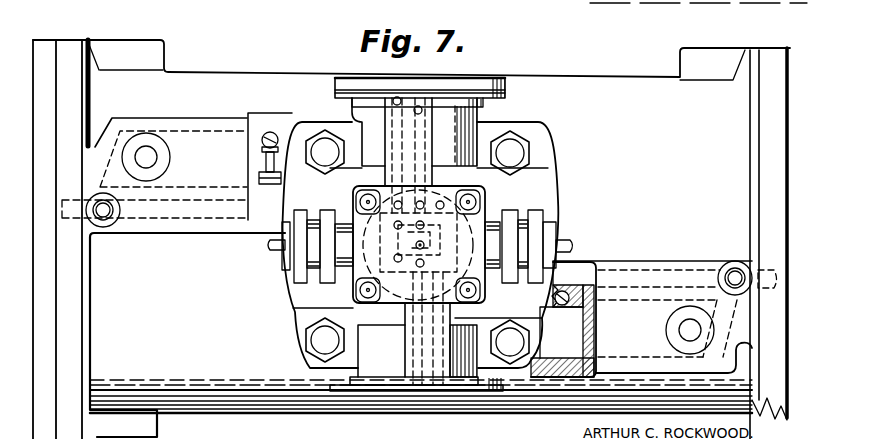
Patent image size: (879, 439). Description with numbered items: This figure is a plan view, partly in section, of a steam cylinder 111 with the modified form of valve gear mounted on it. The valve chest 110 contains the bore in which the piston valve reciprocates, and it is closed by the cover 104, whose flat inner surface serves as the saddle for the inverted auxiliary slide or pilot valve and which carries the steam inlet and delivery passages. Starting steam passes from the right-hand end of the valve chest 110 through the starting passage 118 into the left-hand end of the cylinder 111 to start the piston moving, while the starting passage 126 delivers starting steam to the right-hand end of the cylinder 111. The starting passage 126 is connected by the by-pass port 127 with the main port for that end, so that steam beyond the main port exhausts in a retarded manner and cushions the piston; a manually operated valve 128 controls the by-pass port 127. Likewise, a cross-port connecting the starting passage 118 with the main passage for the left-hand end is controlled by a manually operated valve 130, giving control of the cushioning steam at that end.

The cover 104 is at (467, 233).
The valve chest 110 is at (480, 118).
The cylinder 111 is at (598, 88).
The starting passage 118 is at (168, 218).
The starting passage 126 is at (650, 272).
The by-pass port 127 is at (575, 282).
The valve 128 is at (567, 300).
The valve 130 is at (289, 128).